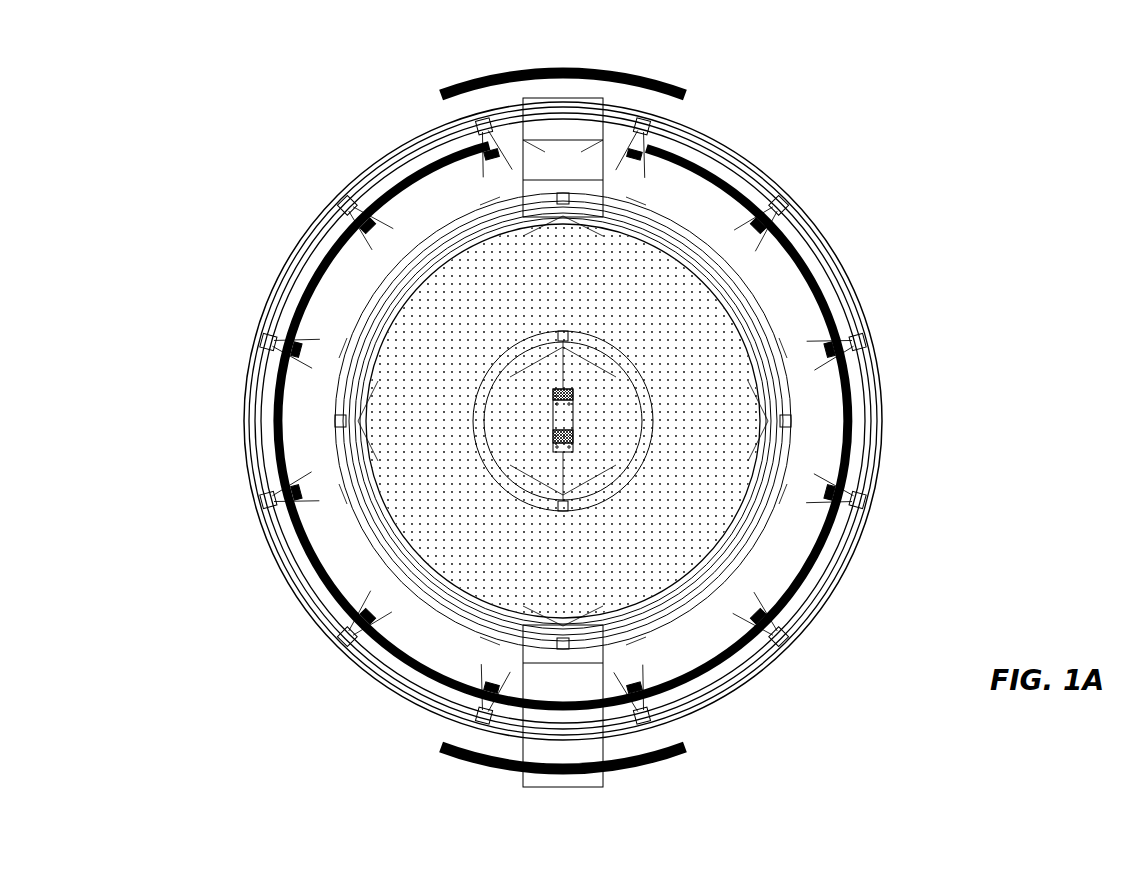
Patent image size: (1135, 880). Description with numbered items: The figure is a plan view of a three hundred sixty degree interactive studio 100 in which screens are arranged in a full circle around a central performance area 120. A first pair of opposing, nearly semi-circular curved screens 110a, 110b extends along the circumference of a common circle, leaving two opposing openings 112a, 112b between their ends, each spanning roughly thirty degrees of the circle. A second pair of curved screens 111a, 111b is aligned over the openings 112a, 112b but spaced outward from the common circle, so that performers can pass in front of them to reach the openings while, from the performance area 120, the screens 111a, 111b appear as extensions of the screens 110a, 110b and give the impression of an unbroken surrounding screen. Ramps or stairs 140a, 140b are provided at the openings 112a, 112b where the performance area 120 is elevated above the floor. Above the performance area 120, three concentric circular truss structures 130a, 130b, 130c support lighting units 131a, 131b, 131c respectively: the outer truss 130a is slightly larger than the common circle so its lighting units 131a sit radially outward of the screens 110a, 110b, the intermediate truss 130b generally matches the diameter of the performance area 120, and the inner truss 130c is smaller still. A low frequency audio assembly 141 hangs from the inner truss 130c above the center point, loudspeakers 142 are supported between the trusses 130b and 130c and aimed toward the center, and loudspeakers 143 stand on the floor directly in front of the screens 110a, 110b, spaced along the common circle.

The 360 degree interactive studio 100 is at (155, 140).
The first curved screen 110a is at (305, 290).
The second curved screen 110b is at (810, 266).
The first outer curved screen 111a is at (489, 66).
The second outer curved screen 111b is at (668, 768).
The first opening 112a is at (465, 108).
The second opening 112b is at (453, 733).
The performance area 120 is at (782, 531).
The outer circular truss structure 130a is at (741, 151).
The intermediate circular truss structure 130b is at (784, 446).
The inner circular truss structure 130c is at (650, 385).
The outer lighting units 131a is at (791, 196).
The intermediate lighting units 131b is at (336, 422).
The inner lighting units 131c is at (551, 511).
The first ramp or stairs 140a is at (586, 135).
The second ramp or stairs 140b is at (537, 748).
The low frequency audio assembly 141 is at (546, 425).
The loudspeakers 142 is at (354, 226).
The floor loudspeakers 143 is at (652, 703).